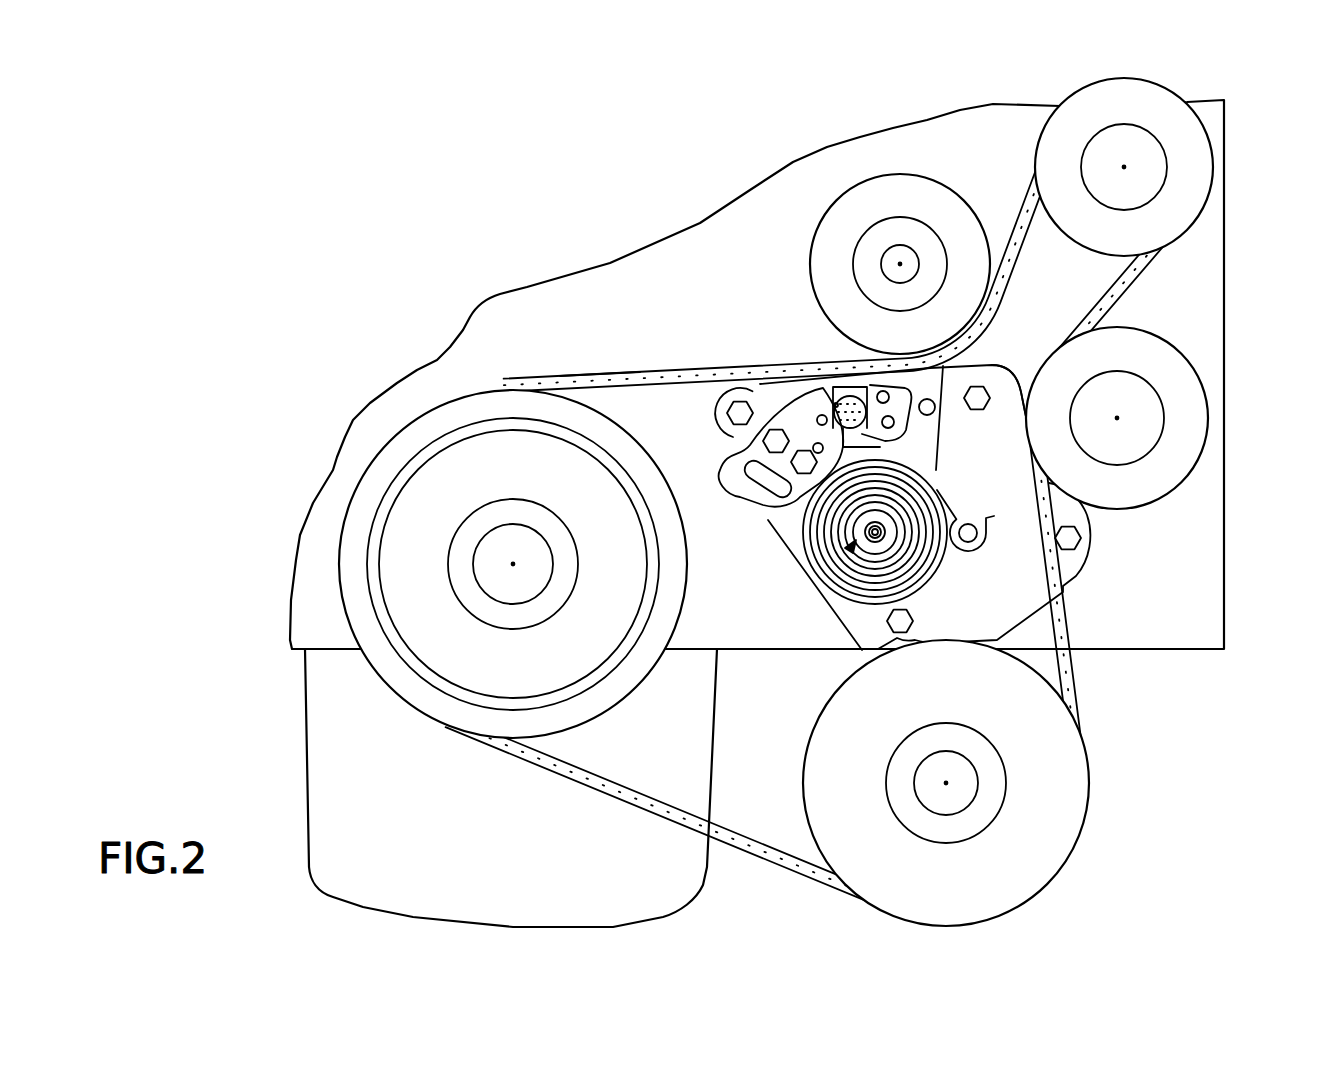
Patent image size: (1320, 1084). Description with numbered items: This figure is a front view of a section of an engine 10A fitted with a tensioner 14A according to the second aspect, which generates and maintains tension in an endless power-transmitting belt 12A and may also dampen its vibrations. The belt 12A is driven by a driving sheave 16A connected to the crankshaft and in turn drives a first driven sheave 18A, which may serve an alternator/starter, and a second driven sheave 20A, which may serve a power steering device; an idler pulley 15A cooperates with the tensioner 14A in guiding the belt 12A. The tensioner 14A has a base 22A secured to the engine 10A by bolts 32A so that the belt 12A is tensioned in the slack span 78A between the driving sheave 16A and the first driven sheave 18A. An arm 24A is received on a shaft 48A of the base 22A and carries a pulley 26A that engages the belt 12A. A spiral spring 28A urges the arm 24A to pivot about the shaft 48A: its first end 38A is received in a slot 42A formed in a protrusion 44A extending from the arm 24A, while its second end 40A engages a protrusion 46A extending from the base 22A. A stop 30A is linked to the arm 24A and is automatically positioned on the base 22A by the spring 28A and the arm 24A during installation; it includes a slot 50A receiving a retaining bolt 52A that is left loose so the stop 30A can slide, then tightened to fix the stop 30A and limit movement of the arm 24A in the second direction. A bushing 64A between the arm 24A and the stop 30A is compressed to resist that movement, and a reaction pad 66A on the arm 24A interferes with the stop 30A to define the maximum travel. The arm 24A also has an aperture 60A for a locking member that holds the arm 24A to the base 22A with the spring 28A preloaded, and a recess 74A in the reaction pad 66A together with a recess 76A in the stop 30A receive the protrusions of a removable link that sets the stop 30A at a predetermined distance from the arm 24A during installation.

The engine 10A is at (525, 285).
The power-transmitting belt 12A is at (767, 857).
The tensioner 14A is at (771, 527).
The idler pulley 15A is at (1200, 410).
The driving sheave 16A is at (447, 703).
The first driven sheave 18A is at (1083, 100).
The second driven sheave 20A is at (1043, 867).
The base 22A is at (1003, 397).
The arm 24A is at (845, 395).
The pulley 26A is at (843, 200).
The spring 28A is at (803, 537).
The stop 30A is at (762, 488).
The bolts 32A is at (726, 413).
The first end of spring 38A is at (853, 548).
The second end of spring 40A is at (990, 525).
The slot 42A is at (864, 541).
The protrusion 44A is at (883, 548).
The protrusion 46A is at (967, 523).
The shaft 48A is at (882, 537).
The slot 50A is at (740, 443).
The retaining bolt 52A is at (798, 455).
The aperture 60A is at (930, 414).
The bushing 64A is at (837, 402).
The reaction pad 66A is at (870, 392).
The recess 74A is at (886, 392).
The recess 76A is at (772, 433).
The slack span 78A is at (598, 376).